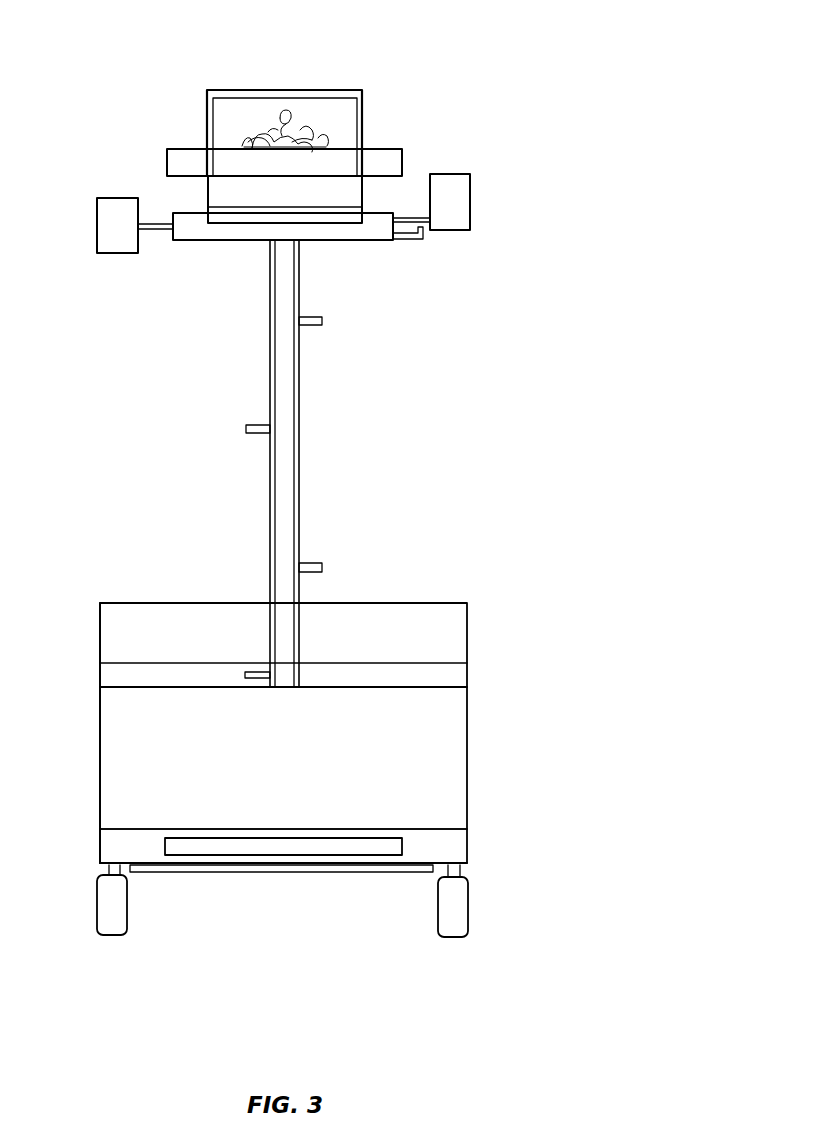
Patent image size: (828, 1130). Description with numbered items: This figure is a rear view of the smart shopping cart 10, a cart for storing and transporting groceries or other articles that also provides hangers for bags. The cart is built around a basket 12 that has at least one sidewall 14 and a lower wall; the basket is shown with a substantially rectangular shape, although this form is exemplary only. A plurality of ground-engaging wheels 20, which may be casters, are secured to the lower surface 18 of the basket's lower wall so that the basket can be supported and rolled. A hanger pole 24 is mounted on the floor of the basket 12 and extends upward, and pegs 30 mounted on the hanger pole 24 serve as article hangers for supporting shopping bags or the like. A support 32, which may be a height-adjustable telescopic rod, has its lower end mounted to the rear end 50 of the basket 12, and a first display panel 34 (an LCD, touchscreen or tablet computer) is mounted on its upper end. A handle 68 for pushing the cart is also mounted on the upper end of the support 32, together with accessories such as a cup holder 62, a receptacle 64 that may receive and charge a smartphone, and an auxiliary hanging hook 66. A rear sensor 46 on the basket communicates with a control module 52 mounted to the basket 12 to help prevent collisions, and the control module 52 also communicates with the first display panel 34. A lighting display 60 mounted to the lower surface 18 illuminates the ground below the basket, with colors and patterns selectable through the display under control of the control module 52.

The smart shopping cart 10 is at (572, 367).
The basket 12 is at (447, 783).
The sidewall 14 is at (108, 792).
The lower surface 18 is at (395, 872).
The ground-engaging wheels 20 is at (108, 925).
The hanger pole 24 is at (300, 393).
The pegs 30 is at (322, 320).
The support 32 is at (287, 268).
The first display panel 34 is at (351, 90).
The rear sensor 46 is at (298, 847).
The rear end 50 is at (362, 678).
The control module 52 is at (422, 829).
The lighting display 60 is at (203, 872).
The cup holder 62 is at (457, 222).
The receptacle 64 is at (118, 238).
The auxiliary hanging hook 66 is at (407, 233).
The handle 68 is at (392, 160).